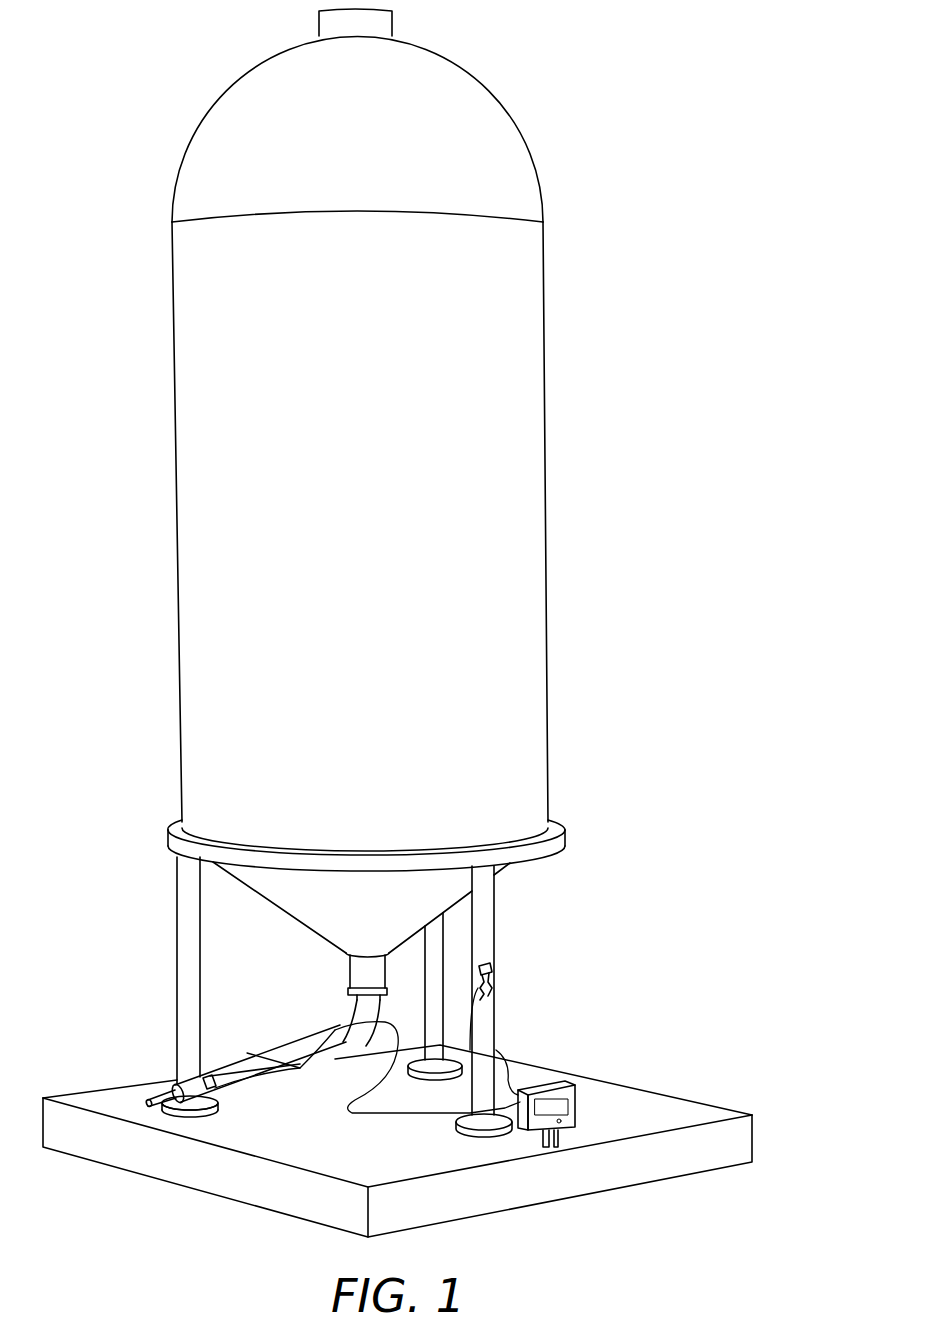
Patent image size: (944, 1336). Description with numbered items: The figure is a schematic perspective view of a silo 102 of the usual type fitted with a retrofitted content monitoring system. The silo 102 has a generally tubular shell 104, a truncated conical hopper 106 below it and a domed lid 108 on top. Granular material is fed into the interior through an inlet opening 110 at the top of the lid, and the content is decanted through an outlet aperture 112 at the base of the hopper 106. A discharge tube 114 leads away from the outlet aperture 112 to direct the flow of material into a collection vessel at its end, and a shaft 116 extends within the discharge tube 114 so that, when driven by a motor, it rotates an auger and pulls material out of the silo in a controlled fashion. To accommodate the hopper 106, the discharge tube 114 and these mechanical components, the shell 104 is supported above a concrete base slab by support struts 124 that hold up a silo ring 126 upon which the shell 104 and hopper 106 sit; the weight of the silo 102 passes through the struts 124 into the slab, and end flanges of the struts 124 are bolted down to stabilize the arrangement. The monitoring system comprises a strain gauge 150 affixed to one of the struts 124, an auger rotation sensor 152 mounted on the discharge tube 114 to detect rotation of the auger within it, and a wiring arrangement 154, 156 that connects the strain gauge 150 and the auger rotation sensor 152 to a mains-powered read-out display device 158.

The silo 102 is at (557, 363).
The tubular shell 104 is at (376, 548).
The truncated conical hopper 106 is at (383, 921).
The domed lid 108 is at (378, 141).
The inlet opening 110 is at (393, 21).
The outlet aperture 112 is at (342, 958).
The discharge tube 114 is at (248, 1074).
The shaft 116 is at (152, 1098).
The support struts 124 is at (490, 918).
The silo ring 126 is at (562, 836).
The strain gauge 150 is at (492, 978).
The auger rotation sensor 152 is at (215, 1077).
The wiring arrangement 154 is at (400, 1118).
The wiring arrangement 156 is at (505, 1058).
The read-out display device 158 is at (572, 1086).